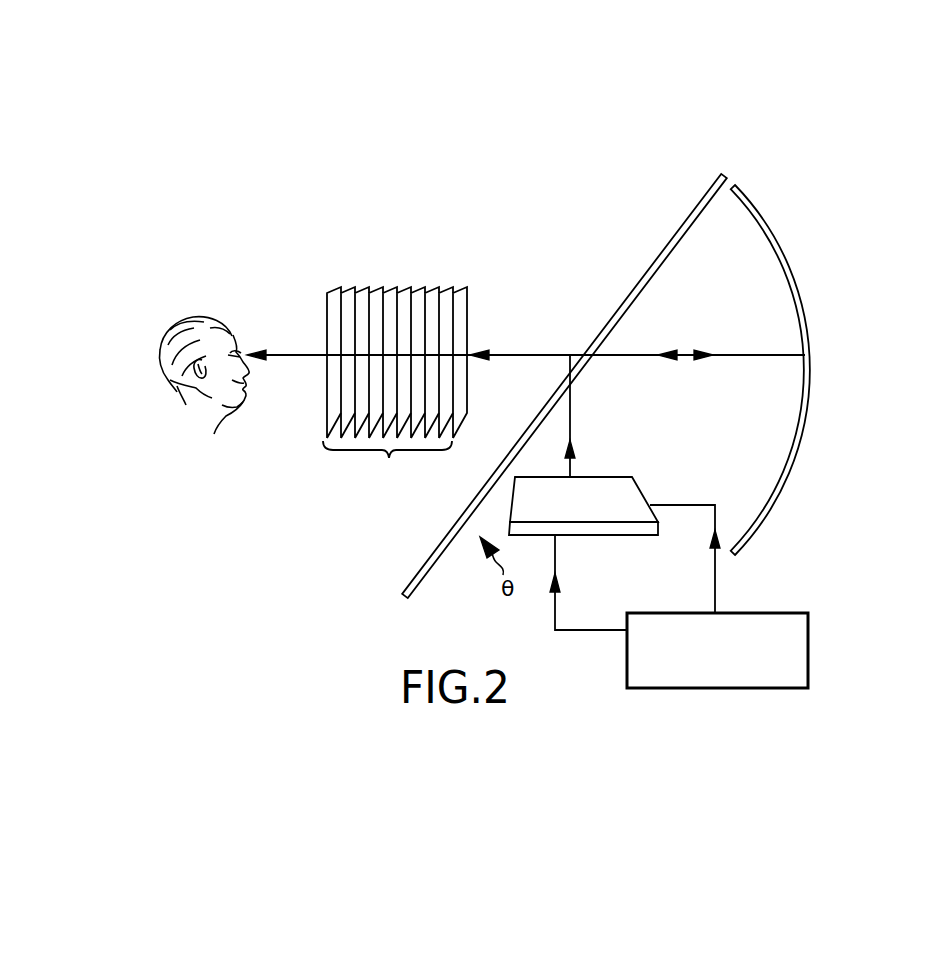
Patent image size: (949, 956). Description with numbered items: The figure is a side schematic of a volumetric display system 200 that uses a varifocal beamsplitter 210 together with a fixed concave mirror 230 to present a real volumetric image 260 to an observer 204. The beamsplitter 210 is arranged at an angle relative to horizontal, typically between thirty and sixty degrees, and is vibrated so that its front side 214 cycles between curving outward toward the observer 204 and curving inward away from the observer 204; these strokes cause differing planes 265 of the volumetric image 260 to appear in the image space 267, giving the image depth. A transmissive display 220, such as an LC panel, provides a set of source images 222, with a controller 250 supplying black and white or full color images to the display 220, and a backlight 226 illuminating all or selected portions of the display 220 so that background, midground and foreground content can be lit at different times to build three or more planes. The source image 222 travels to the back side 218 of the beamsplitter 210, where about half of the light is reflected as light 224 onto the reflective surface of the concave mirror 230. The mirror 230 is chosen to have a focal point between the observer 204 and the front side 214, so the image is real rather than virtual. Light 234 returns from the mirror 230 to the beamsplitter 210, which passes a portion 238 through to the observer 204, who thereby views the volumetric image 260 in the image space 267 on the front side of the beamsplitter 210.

The volumetric display system 200 is at (887, 140).
The observer 204 is at (165, 393).
The varifocal beamsplitter 210 is at (665, 238).
The front side 214 is at (401, 592).
The back side 218 is at (435, 562).
The transmissive display 220 is at (729, 466).
The source images 222 is at (572, 468).
The reflected light 224 is at (765, 353).
The backlight 226 is at (583, 533).
The concave mirror 230 is at (745, 185).
The light reflected from the concave mirror 234 is at (632, 353).
The transmitted light portion 238 is at (497, 355).
The controller 250 is at (737, 677).
The volumetric image 260 is at (303, 472).
The planes 265 is at (342, 295).
The image space 267 is at (405, 546).